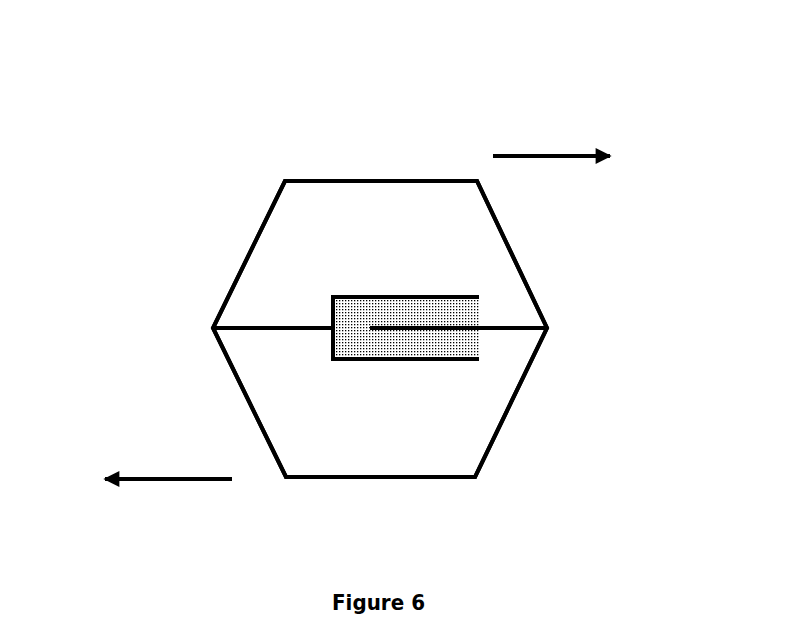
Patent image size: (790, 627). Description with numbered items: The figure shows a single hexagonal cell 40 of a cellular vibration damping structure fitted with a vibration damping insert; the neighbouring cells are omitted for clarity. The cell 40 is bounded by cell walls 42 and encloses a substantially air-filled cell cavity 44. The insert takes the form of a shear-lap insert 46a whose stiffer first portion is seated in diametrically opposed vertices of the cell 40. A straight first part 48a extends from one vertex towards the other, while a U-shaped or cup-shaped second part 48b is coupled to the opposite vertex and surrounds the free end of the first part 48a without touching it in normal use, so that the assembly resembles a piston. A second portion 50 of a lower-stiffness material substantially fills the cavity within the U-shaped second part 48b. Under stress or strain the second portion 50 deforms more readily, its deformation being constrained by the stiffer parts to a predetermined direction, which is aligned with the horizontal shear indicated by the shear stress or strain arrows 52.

The cell 40 is at (262, 167).
The cell wall 42 is at (522, 273).
The cell cavity 44 is at (455, 415).
The shear-lap insert 46a is at (285, 274).
The first part 48a is at (502, 330).
The second part 48b is at (292, 328).
The second portion 50 is at (437, 308).
The shear stress or strain arrows 52 is at (552, 152).